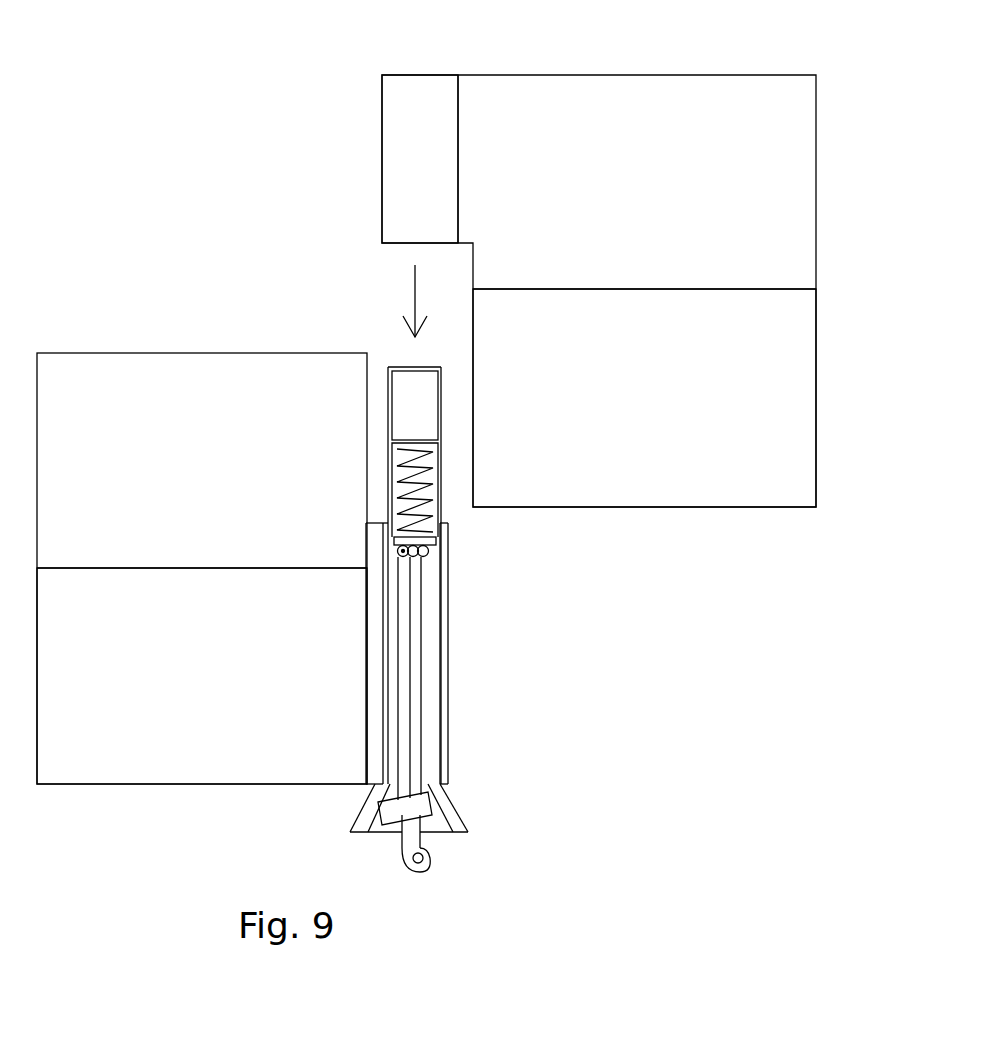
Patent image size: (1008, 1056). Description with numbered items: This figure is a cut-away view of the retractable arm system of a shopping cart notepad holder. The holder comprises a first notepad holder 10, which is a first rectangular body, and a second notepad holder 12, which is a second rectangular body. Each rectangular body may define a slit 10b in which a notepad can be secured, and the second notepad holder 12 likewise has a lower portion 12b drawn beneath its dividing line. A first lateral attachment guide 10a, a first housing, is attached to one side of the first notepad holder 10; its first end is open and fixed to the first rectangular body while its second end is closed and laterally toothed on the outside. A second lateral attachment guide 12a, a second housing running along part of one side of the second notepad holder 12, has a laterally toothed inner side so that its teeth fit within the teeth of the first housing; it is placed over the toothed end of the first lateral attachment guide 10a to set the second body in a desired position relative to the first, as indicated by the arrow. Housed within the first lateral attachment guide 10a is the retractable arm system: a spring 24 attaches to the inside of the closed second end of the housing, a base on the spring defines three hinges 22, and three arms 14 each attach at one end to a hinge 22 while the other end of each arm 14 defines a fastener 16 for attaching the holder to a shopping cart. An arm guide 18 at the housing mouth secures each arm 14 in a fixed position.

The first notepad holder 10 is at (202, 487).
The first lateral attachment guide 10a is at (448, 711).
The slit 10b is at (178, 568).
The second notepad holder 12 is at (650, 200).
The second lateral attachment guide 12a is at (400, 193).
The lower portion of second block 12b is at (720, 290).
The arm 14 is at (413, 728).
The fastener 16 is at (424, 870).
The arm guide 18 is at (372, 806).
The hinge 22 is at (428, 553).
The spring 24 is at (430, 485).